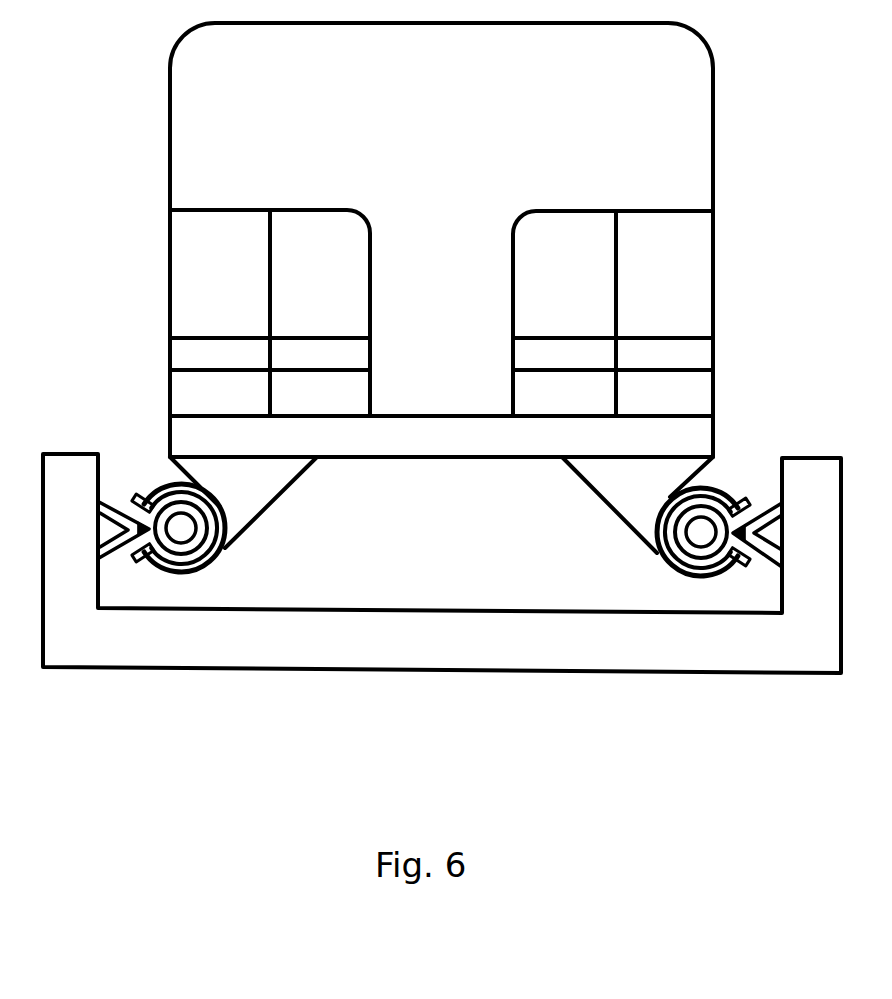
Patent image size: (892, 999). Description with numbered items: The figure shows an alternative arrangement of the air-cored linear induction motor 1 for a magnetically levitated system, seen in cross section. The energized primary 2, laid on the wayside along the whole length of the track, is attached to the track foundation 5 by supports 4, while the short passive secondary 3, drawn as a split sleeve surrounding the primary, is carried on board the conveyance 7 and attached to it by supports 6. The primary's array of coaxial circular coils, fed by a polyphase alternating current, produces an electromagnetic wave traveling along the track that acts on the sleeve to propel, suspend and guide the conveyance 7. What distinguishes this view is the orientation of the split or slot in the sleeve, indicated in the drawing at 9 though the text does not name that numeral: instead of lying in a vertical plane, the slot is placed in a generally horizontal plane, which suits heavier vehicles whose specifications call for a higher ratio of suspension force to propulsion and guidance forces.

The linear induction motor 1 is at (187, 525).
The energized primary 2 is at (200, 545).
The passive secondary 3 is at (193, 573).
The supports 4 is at (113, 505).
The track foundation 5 is at (806, 458).
The supports 6 is at (290, 483).
The conveyance 7 is at (715, 353).
The clip tab 9 is at (140, 557).